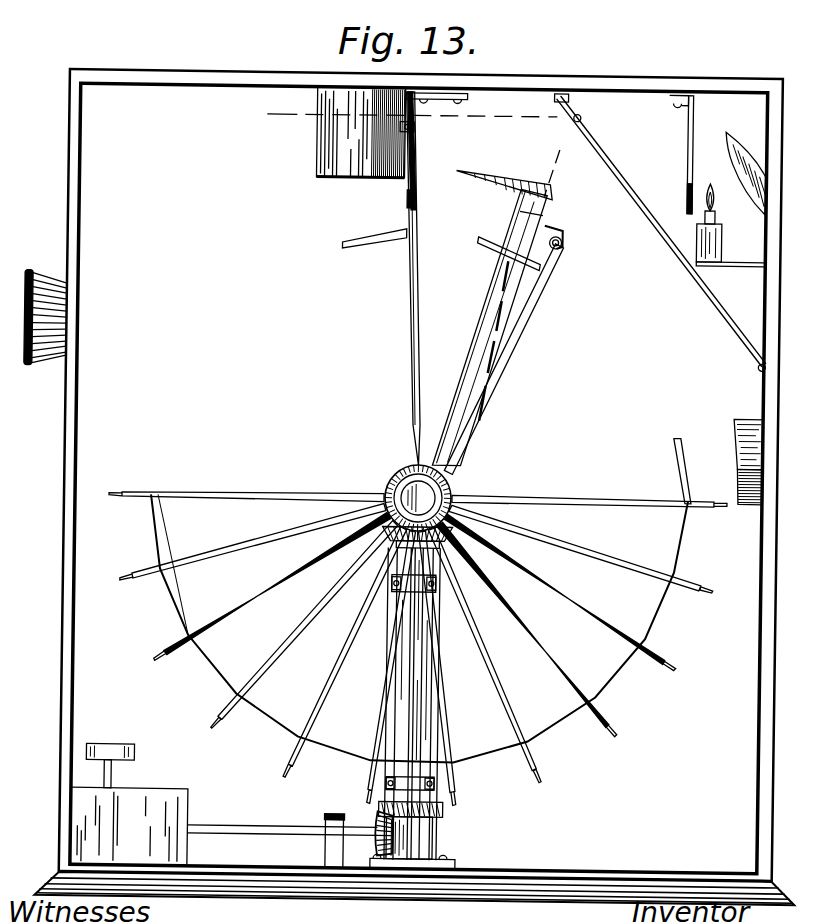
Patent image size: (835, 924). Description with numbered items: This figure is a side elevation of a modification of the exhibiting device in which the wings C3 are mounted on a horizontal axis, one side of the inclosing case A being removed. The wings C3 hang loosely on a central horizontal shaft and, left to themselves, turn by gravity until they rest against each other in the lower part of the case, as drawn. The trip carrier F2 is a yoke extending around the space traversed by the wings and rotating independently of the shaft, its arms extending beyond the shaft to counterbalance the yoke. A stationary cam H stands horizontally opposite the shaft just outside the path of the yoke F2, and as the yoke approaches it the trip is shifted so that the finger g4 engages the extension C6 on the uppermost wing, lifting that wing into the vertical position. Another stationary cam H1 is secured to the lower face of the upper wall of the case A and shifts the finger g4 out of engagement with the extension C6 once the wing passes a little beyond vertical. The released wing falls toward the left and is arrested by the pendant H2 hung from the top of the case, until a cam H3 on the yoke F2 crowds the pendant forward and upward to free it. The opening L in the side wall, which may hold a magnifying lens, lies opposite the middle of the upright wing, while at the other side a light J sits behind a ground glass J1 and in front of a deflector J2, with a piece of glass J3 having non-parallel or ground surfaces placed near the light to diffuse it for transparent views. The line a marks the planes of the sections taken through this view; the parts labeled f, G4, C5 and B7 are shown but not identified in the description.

The case A is at (73, 409).
The opening L is at (57, 321).
The section line a is at (411, 149).
The pivot knob f is at (583, 112).
The stationary cam H is at (732, 479).
The stationary cam H1 is at (360, 132).
The pendant H2 is at (404, 199).
The cam H3 is at (503, 189).
The trip carrier F2 is at (498, 288).
The hook bracket G4 is at (553, 220).
The finger g4 is at (562, 242).
The wings C3 is at (236, 548).
The rim C5 is at (178, 597).
The extension C6 is at (211, 718).
The light J is at (731, 225).
The ground glass J1 is at (642, 209).
The deflector J2 is at (735, 163).
The piece of glass J3 is at (682, 195).
The drive box B7 is at (156, 823).